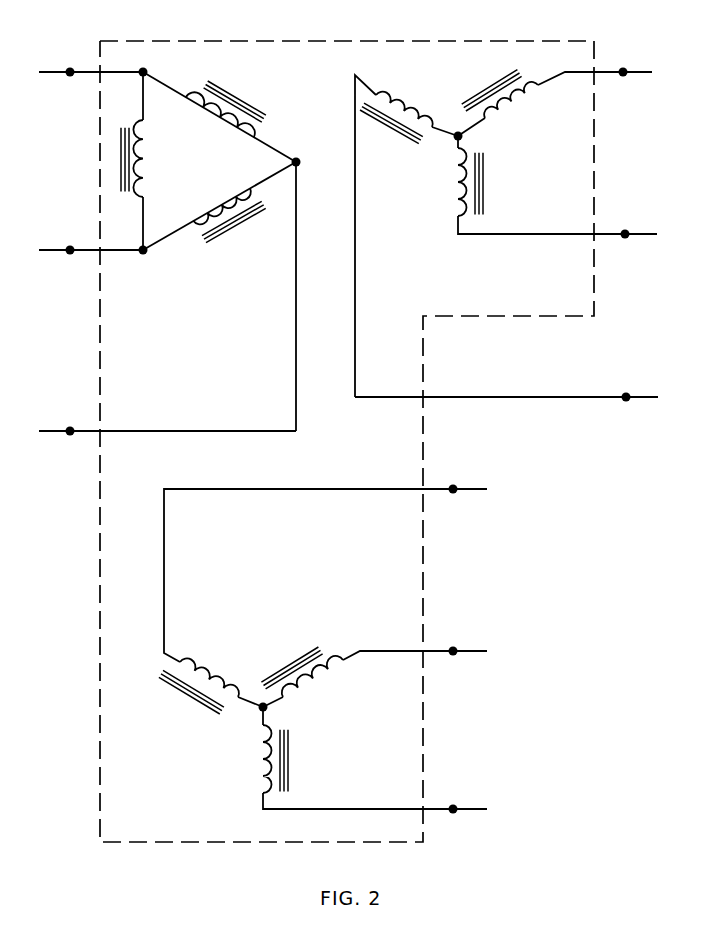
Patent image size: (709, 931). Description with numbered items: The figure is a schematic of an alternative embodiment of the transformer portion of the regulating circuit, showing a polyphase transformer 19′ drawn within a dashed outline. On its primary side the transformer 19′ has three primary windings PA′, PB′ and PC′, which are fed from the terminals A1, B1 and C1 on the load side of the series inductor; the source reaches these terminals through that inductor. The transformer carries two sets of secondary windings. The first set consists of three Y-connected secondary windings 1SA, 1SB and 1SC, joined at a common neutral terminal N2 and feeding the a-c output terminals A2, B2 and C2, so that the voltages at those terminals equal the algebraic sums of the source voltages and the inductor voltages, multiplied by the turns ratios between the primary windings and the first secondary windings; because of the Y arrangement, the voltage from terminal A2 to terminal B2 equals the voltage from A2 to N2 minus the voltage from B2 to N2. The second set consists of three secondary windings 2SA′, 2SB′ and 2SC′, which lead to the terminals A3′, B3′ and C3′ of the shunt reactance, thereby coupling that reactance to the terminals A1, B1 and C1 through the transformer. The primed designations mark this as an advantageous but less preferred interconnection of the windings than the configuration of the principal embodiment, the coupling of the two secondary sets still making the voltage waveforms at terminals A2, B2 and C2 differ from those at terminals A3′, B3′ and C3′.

The polyphase transformer 19′ is at (100, 712).
The terminal A1 is at (70, 70).
The terminal B1 is at (70, 429).
The terminal C1 is at (70, 248).
The primary winding PA′ is at (212, 119).
The primary winding PB′ is at (213, 202).
The primary winding PC′ is at (147, 156).
The first secondary winding 1SA is at (404, 98).
The first secondary winding 1SB is at (512, 107).
The first secondary winding 1SC is at (455, 188).
The neutral terminal N2 is at (466, 138).
The a-c output terminal A2 is at (626, 399).
The a-c output terminal B2 is at (623, 74).
The a-c output terminal C2 is at (625, 236).
The terminal A3′ is at (453, 487).
The terminal B3′ is at (453, 649).
The terminal C3′ is at (453, 807).
The second secondary winding 2SA′ is at (210, 682).
The second secondary winding 2SB′ is at (314, 685).
The second secondary winding 2SC′ is at (260, 764).